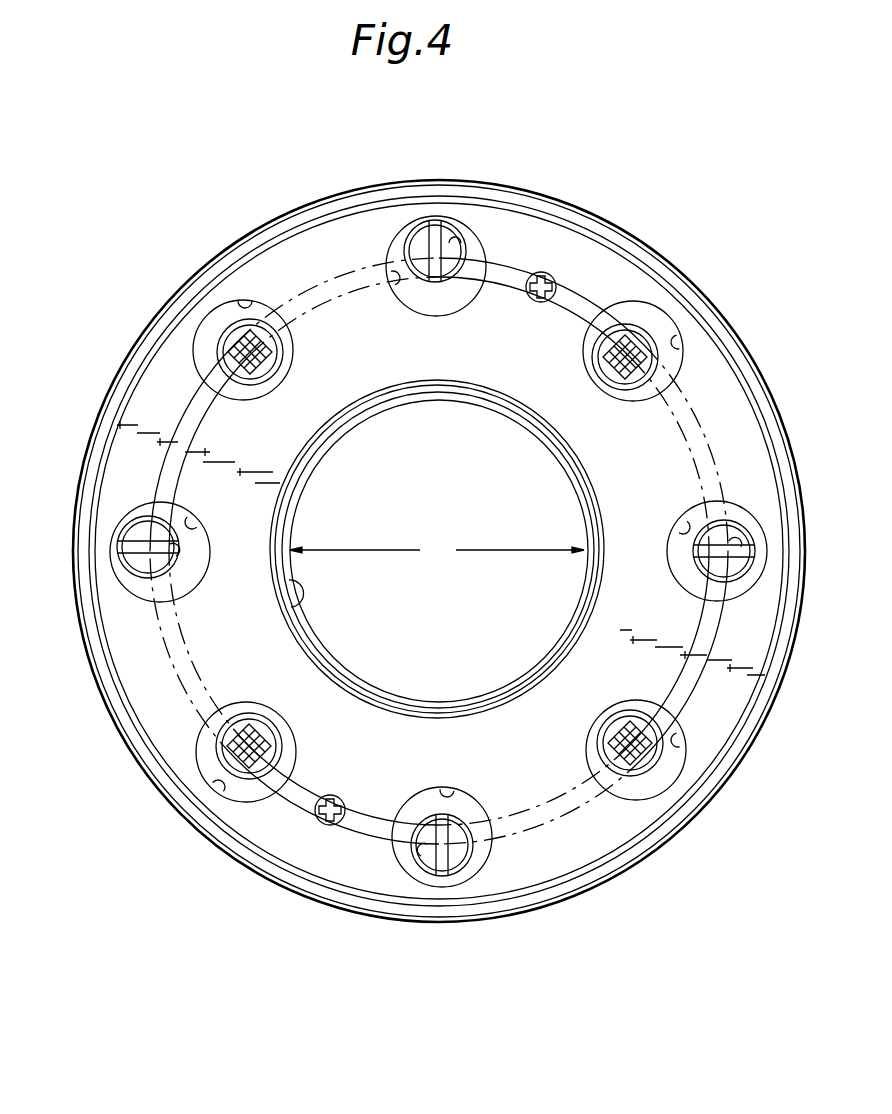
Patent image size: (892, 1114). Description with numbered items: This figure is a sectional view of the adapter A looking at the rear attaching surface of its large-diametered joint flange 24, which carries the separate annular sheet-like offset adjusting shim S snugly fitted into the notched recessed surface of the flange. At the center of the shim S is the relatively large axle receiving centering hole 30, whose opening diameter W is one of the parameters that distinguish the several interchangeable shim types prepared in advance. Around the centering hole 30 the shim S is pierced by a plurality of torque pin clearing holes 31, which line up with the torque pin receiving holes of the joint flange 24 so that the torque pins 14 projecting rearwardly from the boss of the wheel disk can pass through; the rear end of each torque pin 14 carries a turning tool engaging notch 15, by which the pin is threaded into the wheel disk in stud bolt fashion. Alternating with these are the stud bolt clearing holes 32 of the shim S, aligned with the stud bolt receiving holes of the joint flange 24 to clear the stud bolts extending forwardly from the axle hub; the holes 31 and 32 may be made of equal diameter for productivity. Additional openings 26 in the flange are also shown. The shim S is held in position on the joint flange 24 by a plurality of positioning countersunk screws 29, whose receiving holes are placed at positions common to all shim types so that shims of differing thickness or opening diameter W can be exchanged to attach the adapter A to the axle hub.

The torque pin 14 is at (452, 245).
The turning tool engaging notch 15 is at (438, 290).
The joint flange 24 is at (578, 212).
The fastening hole 26 is at (262, 363).
The positioning countersunk screw 29 is at (540, 300).
The axle receiving centering hole 30 is at (297, 606).
The torque pin clearing hole 31 is at (393, 285).
The stud bolt clearing hole 32 is at (268, 300).
The adapter A is at (641, 866).
The offset adjusting shim S is at (357, 672).
The opening diameter W is at (437, 550).